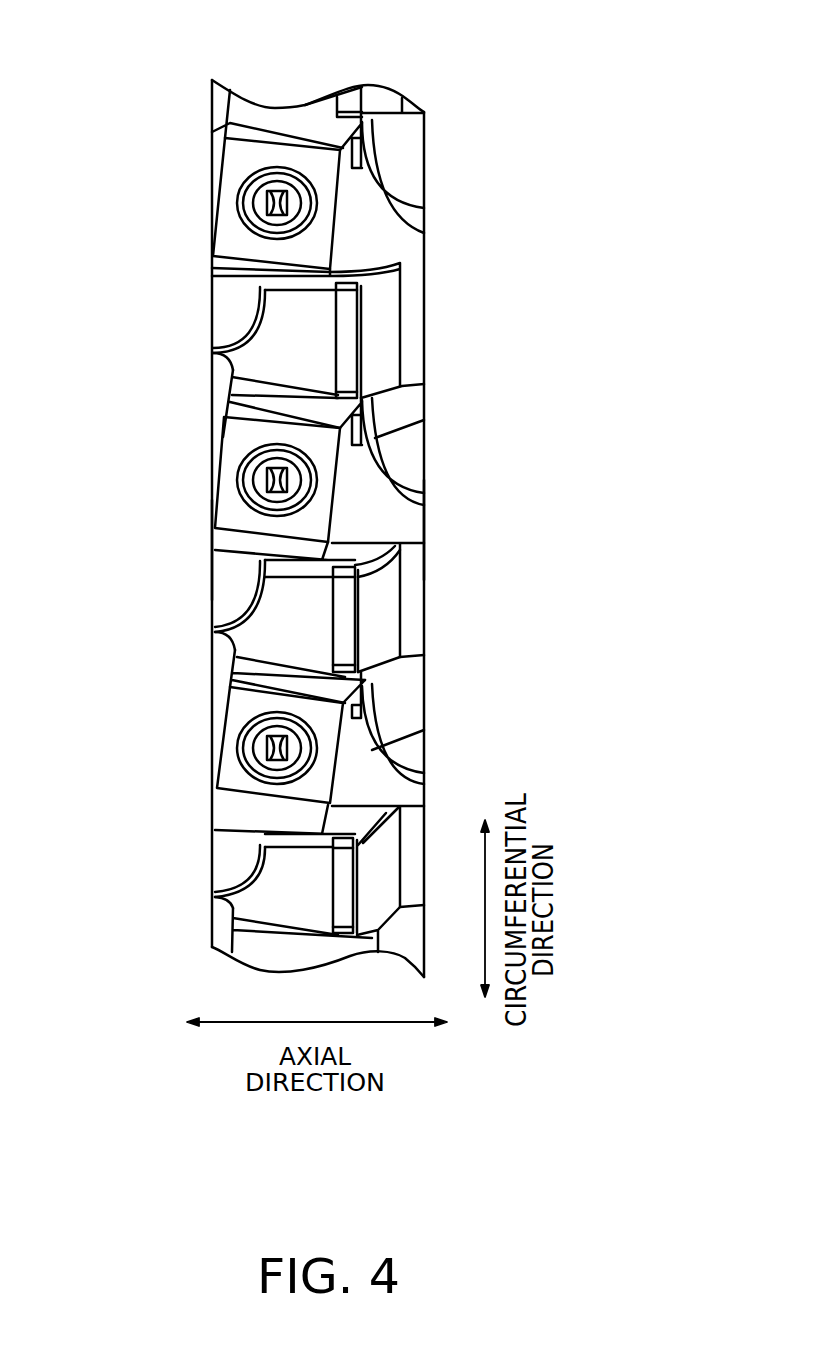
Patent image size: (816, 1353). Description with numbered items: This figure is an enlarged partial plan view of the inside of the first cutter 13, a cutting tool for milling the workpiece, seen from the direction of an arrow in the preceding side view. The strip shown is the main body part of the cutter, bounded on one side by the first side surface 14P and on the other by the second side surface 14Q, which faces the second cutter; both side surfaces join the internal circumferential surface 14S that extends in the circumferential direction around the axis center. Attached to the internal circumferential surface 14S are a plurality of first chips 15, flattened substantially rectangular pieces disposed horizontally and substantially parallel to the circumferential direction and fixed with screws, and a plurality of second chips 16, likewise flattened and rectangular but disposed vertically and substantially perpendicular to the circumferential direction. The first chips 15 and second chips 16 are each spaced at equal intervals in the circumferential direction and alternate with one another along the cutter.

The first cutter 13 is at (533, 78).
The first side surface 14P is at (212, 549).
The second side surface 14Q is at (425, 525).
The internal circumferential surface 14S is at (272, 642).
The first chips 15 is at (230, 223).
The second chips 16 is at (413, 323).